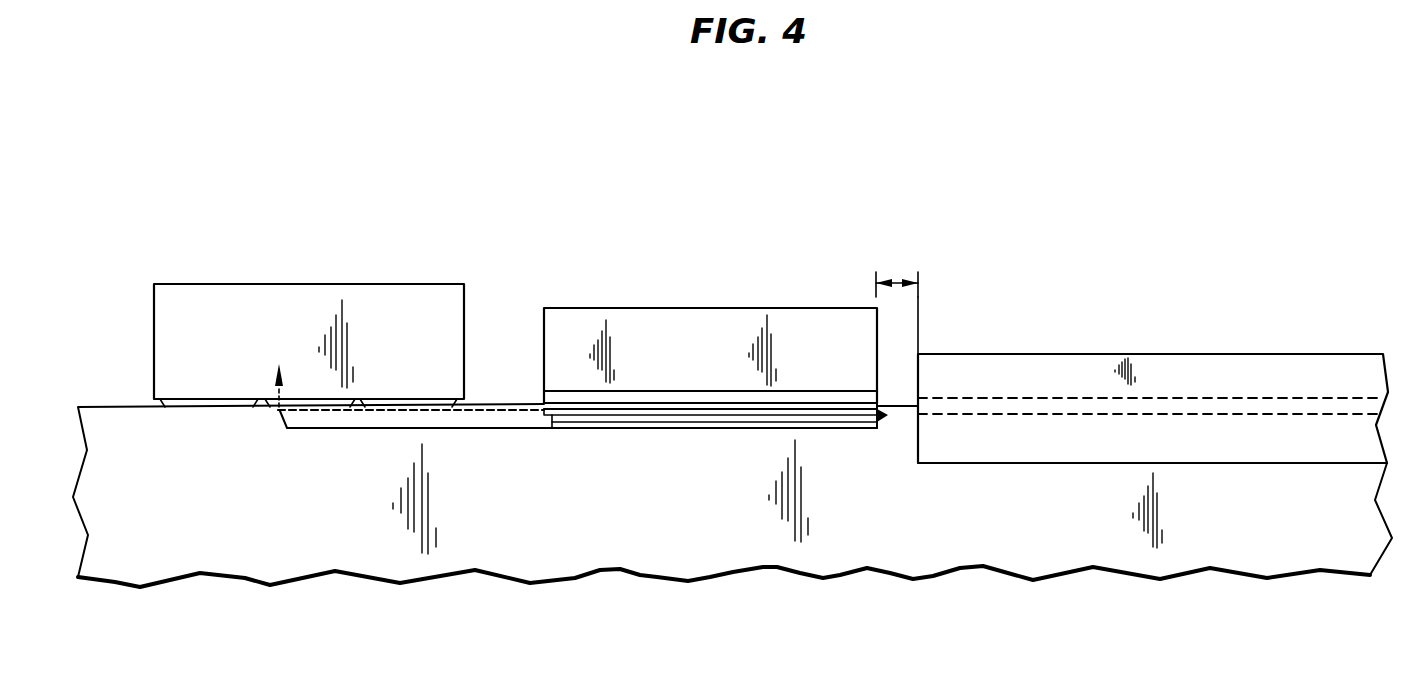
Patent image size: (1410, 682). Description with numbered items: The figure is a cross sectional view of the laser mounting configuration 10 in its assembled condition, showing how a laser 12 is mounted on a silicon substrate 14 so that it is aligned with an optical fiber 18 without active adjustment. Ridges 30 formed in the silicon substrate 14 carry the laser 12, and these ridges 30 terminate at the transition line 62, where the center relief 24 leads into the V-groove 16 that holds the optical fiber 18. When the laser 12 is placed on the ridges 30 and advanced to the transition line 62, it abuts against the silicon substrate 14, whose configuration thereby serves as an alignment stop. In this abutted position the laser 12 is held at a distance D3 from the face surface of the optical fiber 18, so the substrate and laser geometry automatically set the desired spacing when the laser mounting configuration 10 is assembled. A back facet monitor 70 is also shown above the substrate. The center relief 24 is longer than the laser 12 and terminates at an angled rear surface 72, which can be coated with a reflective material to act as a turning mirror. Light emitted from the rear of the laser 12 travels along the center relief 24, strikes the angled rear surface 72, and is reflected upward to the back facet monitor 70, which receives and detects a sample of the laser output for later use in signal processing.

The laser mounting configuration 10 is at (1010, 165).
The laser 12 is at (752, 308).
The silicon substrate 14 is at (667, 540).
The V-groove 16 is at (910, 433).
The optical fiber 18 is at (995, 354).
The center relief 24 is at (473, 418).
The ridges 30 is at (485, 405).
The transition line 62 is at (885, 410).
The back facet monitor 70 is at (373, 284).
The angled rear surface 72 is at (283, 412).
The distance D3 is at (897, 283).